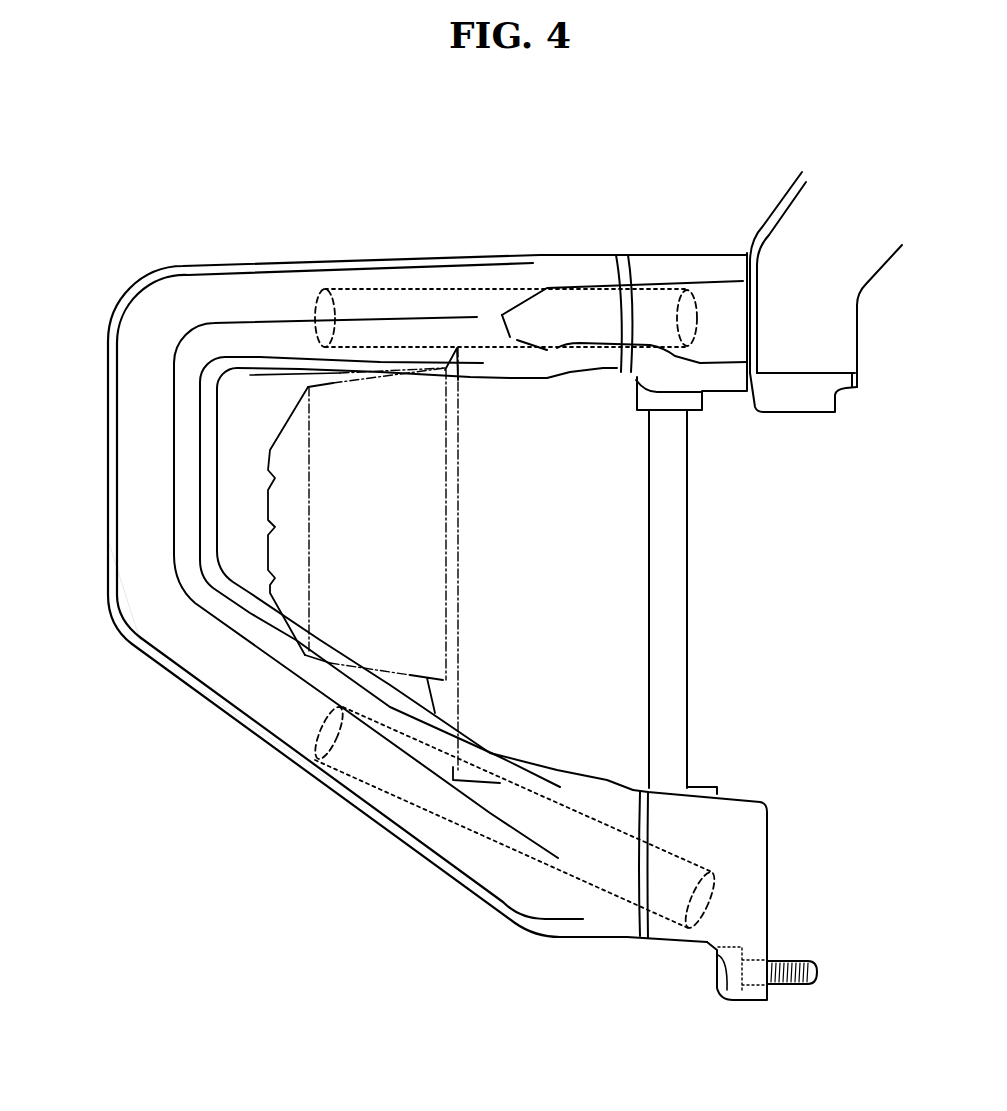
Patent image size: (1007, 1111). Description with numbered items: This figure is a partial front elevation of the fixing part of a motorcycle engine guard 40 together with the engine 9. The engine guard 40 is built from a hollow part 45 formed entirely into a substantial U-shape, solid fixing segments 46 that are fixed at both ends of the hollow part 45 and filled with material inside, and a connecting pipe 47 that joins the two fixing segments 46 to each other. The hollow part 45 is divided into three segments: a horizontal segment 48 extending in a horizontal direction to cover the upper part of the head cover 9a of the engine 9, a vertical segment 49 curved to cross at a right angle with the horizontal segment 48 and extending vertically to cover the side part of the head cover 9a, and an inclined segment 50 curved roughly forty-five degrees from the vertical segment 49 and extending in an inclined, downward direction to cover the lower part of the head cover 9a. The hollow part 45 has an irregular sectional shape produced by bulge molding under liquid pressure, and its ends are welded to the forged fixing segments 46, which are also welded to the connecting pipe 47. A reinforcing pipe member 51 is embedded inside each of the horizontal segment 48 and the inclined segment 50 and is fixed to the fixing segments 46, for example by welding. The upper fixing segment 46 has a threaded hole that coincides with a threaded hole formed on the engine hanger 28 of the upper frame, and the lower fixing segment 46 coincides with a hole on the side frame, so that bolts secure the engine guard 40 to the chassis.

The engine guard 40 is at (422, 243).
The horizontal segment 48 is at (280, 282).
The hollow part 45 is at (132, 418).
The vertical segment 49 is at (132, 540).
The inclined segment 50 is at (263, 692).
The reinforcing pipe member 51 is at (477, 290).
The fixing segment 46 is at (662, 268).
The engine hanger 28 is at (782, 228).
The connecting pipe 47 is at (677, 597).
The engine 9 is at (580, 535).
The head cover 9a is at (297, 440).